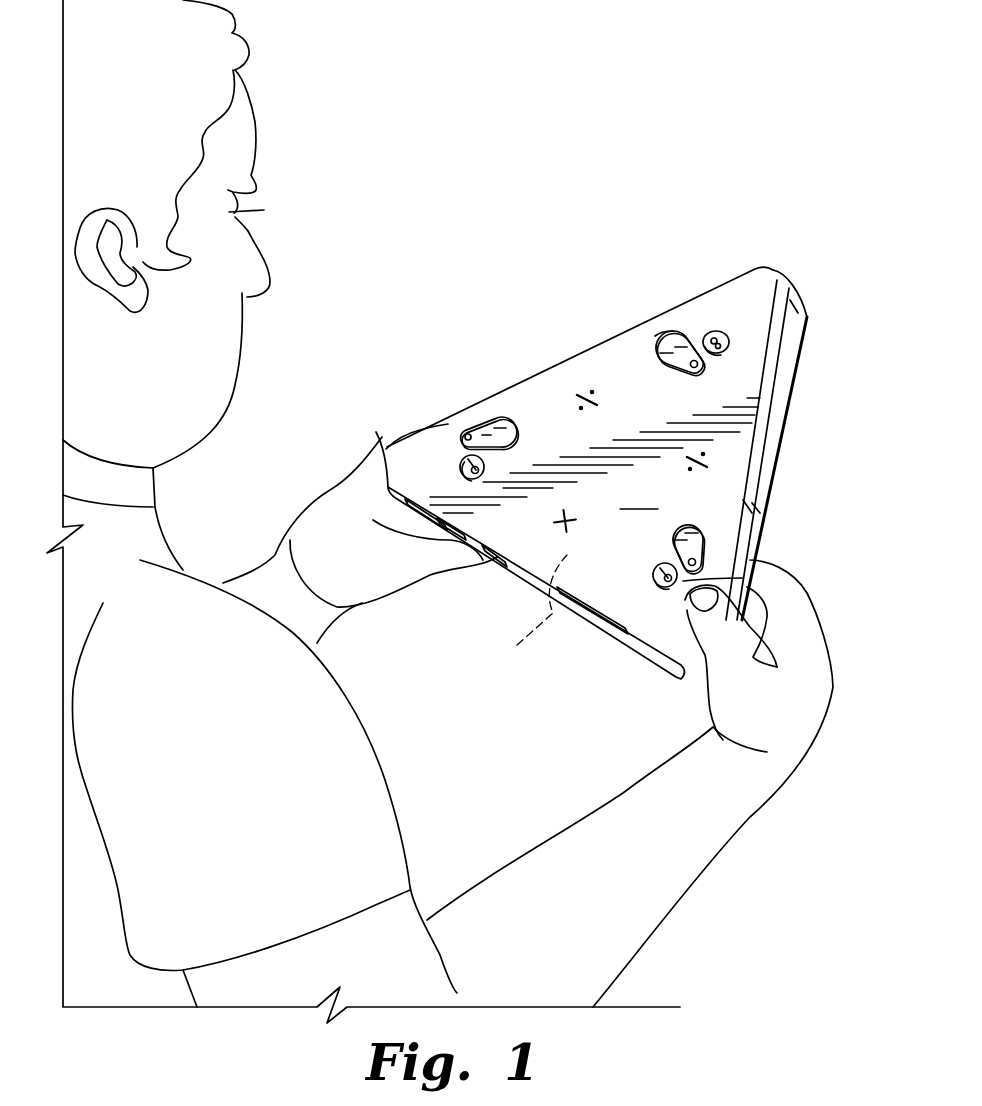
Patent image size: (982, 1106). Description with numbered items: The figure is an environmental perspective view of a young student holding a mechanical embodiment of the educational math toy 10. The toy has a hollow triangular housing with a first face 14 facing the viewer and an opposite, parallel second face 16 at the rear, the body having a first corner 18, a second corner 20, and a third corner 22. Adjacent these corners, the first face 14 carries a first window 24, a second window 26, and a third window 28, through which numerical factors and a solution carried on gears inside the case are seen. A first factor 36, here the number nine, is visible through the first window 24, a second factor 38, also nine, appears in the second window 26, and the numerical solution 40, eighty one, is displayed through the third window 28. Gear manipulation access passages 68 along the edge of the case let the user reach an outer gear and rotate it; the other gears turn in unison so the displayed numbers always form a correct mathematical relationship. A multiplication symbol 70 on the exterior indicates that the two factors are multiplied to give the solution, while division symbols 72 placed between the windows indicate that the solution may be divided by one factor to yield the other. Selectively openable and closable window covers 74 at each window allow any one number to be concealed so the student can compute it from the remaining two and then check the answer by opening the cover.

The math toy 10 is at (460, 126).
The first face 14 is at (595, 455).
The second face 16 is at (525, 615).
The first corner 18 is at (376, 432).
The second corner 20 is at (690, 670).
The third corner 22 is at (777, 268).
The first window 24 is at (388, 487).
The second window 26 is at (738, 581).
The third window 28 is at (660, 333).
The first factor 36 is at (461, 462).
The second factor 38 is at (653, 573).
The numerical solution 40 is at (716, 331).
The gear manipulation access passages 68 is at (492, 563).
The multiplication symbol 70 is at (561, 521).
The division symbols 72 is at (580, 393).
The window covers 74 is at (507, 417).